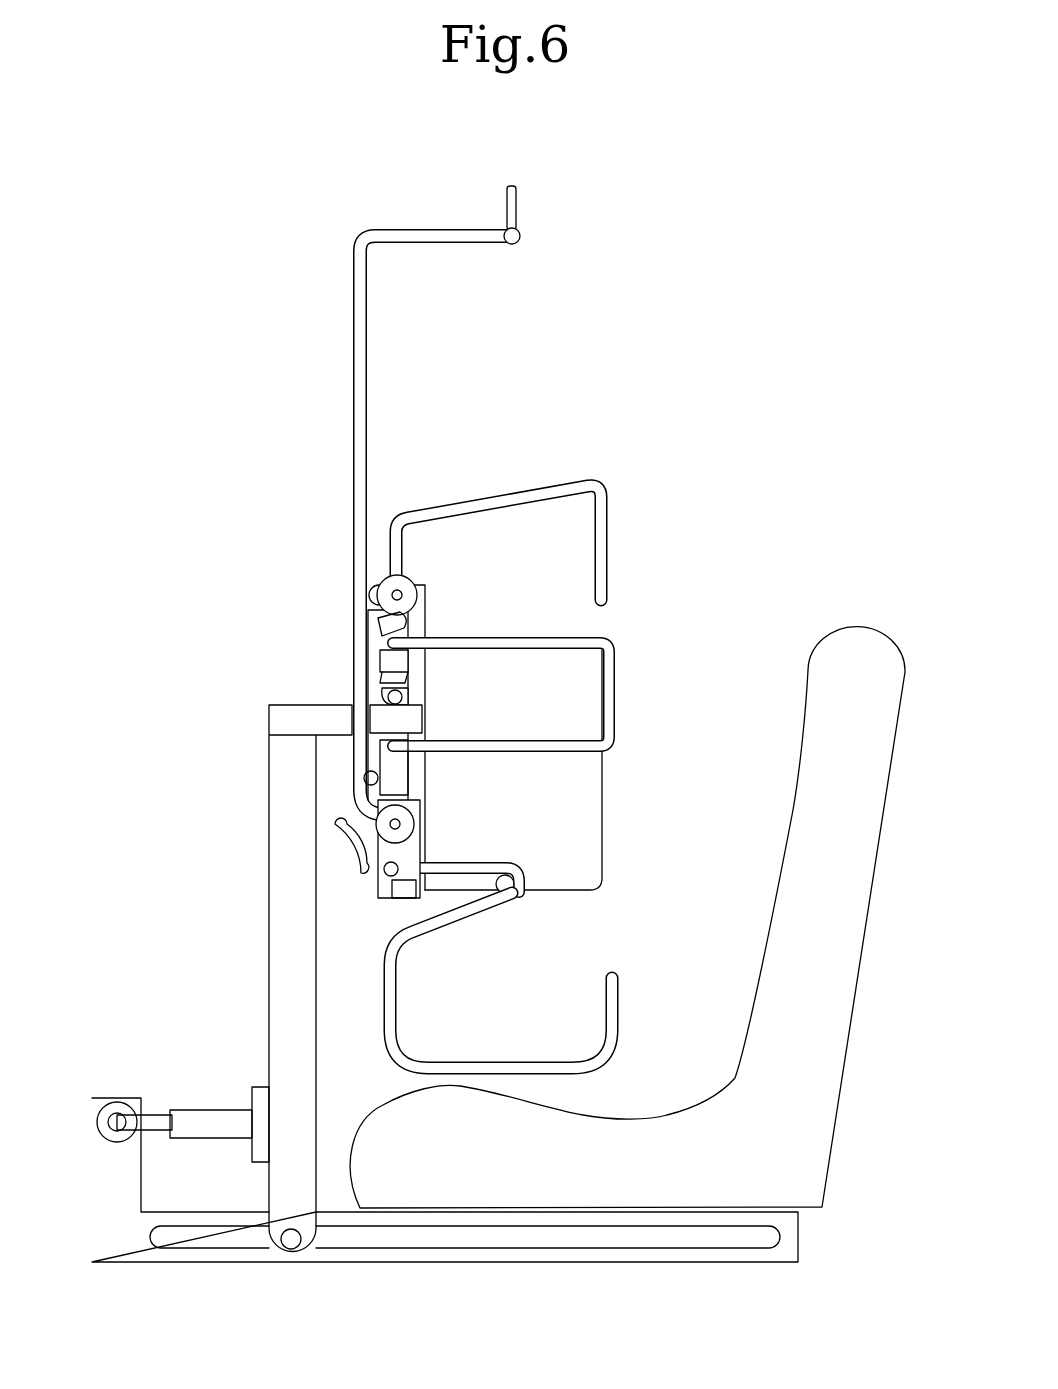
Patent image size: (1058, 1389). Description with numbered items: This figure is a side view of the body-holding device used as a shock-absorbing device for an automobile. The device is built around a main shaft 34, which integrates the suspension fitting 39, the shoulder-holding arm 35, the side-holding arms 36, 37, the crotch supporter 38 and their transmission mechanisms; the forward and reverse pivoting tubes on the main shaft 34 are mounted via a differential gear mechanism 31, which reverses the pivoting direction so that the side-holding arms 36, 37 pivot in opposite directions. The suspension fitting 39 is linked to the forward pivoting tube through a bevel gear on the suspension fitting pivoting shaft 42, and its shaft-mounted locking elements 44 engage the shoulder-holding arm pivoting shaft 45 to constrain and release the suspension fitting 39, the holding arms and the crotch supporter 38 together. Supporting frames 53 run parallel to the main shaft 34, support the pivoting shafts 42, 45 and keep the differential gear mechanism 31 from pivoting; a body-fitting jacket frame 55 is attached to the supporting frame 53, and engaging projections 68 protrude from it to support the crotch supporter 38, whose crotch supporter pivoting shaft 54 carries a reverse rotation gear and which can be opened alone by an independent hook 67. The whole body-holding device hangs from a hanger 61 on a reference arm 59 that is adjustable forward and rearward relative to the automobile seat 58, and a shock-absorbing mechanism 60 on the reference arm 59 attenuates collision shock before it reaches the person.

The differential gear mechanism 31 is at (375, 697).
The main shaft 34 is at (375, 658).
The shoulder-holding arm 35 is at (603, 478).
The side-holding arm 36 is at (568, 694).
The side-holding arm 37 is at (614, 688).
The crotch supporter 38 is at (402, 988).
The suspension fitting 39 is at (350, 298).
The suspension fitting pivoting shaft 42 is at (388, 818).
The locking elements 44 is at (378, 582).
The shoulder-holding arm pivoting shaft 45 is at (395, 583).
The supporting frame 53 is at (425, 607).
The crotch supporter pivoting shaft 54 is at (390, 878).
The jacket frame 55 is at (565, 797).
The automobile seat 58 is at (806, 1055).
The reference arm 59 is at (300, 853).
The shock-absorbing mechanism 60 is at (223, 1110).
The hanger 61 is at (410, 718).
The independent hook 67 is at (378, 870).
The engaging projections 68 is at (522, 892).